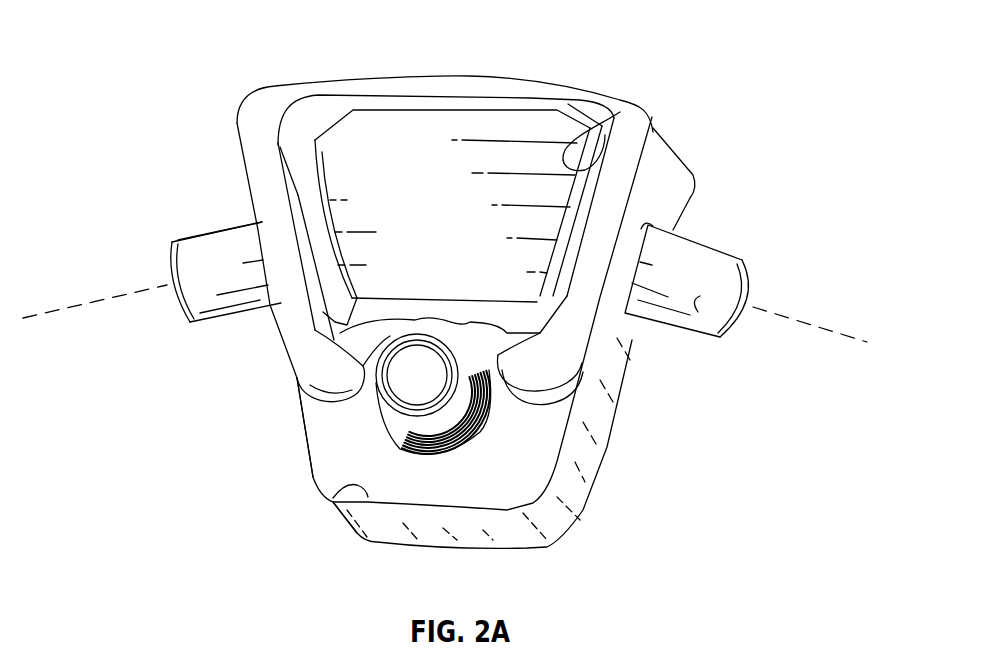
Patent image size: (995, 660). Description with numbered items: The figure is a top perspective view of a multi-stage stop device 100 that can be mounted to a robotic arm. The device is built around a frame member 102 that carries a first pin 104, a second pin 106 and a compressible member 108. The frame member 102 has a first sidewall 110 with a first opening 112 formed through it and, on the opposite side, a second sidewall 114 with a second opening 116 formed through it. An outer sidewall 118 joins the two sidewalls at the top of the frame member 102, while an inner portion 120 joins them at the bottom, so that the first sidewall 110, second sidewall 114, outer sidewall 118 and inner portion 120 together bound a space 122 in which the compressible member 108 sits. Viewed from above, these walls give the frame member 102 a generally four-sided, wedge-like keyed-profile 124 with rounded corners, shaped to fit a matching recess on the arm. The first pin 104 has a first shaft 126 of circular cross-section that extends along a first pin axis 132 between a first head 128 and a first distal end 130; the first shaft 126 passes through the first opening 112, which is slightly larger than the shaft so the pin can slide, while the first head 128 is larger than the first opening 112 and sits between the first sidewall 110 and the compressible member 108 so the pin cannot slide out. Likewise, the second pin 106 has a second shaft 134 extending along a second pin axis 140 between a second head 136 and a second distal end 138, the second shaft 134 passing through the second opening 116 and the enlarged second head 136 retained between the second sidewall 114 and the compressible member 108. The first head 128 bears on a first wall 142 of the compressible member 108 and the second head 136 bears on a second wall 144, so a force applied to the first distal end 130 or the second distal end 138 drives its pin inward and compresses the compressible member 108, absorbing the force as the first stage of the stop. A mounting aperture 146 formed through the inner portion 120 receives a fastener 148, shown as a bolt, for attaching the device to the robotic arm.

The multi-stage stop device 100 is at (178, 33).
The frame member 102 is at (547, 80).
The first pin 104 is at (720, 250).
The second pin 106 is at (190, 240).
The compressible member 108 is at (443, 132).
The first sidewall 110 is at (676, 204).
The first opening 112 is at (643, 318).
The second sidewall 114 is at (250, 147).
The second opening 116 is at (262, 308).
The outer sidewall 118 is at (385, 77).
The inner portion 120 is at (367, 492).
The space 122 is at (298, 124).
The keyed-profile 124 is at (313, 460).
The first shaft 126 is at (696, 305).
The first head 128 is at (620, 112).
The first distal end 130 is at (748, 288).
The first pin axis 132 is at (820, 324).
The second shaft 134 is at (191, 235).
The second head 136 is at (308, 202).
The second distal end 138 is at (176, 312).
The second pin axis 140 is at (100, 300).
The first wall 142 is at (580, 106).
The second wall 144 is at (315, 138).
The mounting aperture 146 is at (462, 452).
The fastener 148 is at (487, 407).